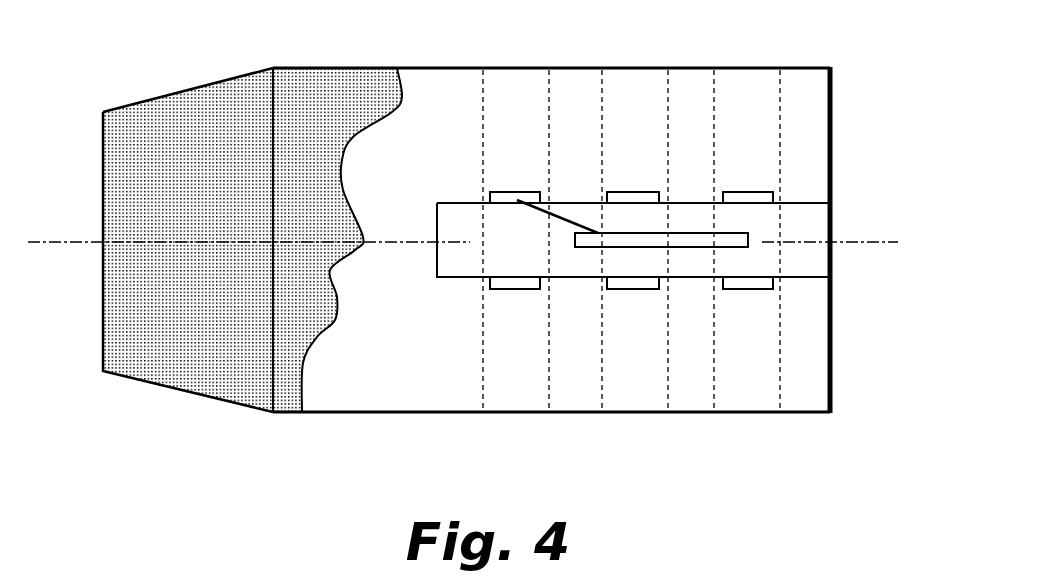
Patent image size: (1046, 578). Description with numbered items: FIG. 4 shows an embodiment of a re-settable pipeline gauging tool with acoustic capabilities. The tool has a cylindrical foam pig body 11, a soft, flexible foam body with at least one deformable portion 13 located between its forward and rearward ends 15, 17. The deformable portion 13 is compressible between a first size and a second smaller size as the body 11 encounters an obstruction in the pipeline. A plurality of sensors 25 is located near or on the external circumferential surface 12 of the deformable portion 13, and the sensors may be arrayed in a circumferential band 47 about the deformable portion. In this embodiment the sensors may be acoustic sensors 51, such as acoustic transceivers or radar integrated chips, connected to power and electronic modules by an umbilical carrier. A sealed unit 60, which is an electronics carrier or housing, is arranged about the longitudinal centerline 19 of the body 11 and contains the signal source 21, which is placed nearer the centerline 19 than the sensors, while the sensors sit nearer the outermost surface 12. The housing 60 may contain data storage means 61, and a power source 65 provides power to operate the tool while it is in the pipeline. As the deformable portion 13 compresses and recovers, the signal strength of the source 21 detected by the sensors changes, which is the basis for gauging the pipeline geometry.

The cylindrical foam pig body 11 is at (285, 413).
The external circumferential surface 12 is at (563, 68).
The deformable portion 13 is at (435, 120).
The forward end 15 is at (118, 372).
The rearward end 17 is at (830, 320).
The longitudinal centerline 19 is at (70, 243).
The signal source 21 is at (787, 256).
The sensors 25 is at (629, 178).
The circumferential band 47 is at (480, 370).
The acoustic sensors 51 is at (737, 192).
The sealed unit 60 is at (805, 203).
The data storage means 61 is at (618, 248).
The power source 65 is at (678, 233).